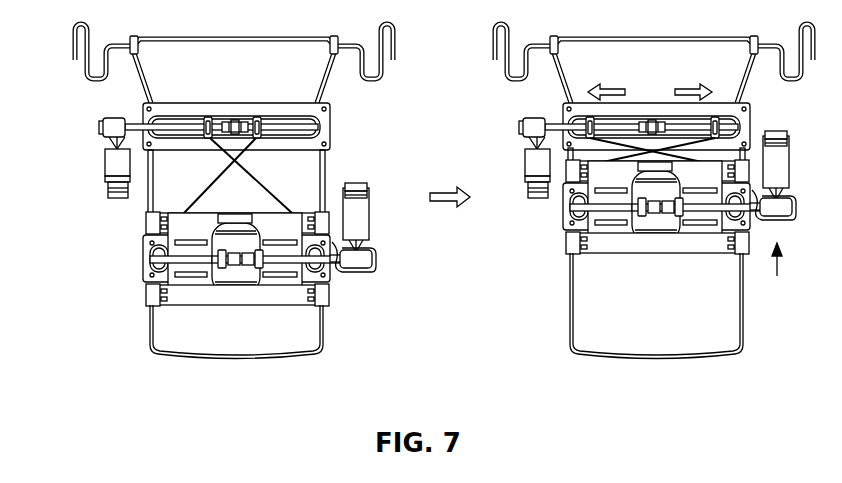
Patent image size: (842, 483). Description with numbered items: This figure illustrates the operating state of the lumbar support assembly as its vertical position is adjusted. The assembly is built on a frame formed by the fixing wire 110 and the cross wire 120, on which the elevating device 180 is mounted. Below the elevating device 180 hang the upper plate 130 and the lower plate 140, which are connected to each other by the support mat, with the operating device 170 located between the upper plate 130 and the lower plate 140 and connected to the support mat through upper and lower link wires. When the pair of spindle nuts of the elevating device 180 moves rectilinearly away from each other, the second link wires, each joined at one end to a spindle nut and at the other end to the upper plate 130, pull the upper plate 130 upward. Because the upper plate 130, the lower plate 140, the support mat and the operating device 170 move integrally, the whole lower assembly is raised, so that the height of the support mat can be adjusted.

The cross wire 120 is at (72, 31).
The fixing wire 110 is at (142, 88).
The elevating device 180 is at (96, 125).
The upper plate 130 is at (148, 216).
The operating device 170 is at (138, 257).
The lower plate 140 is at (150, 297).